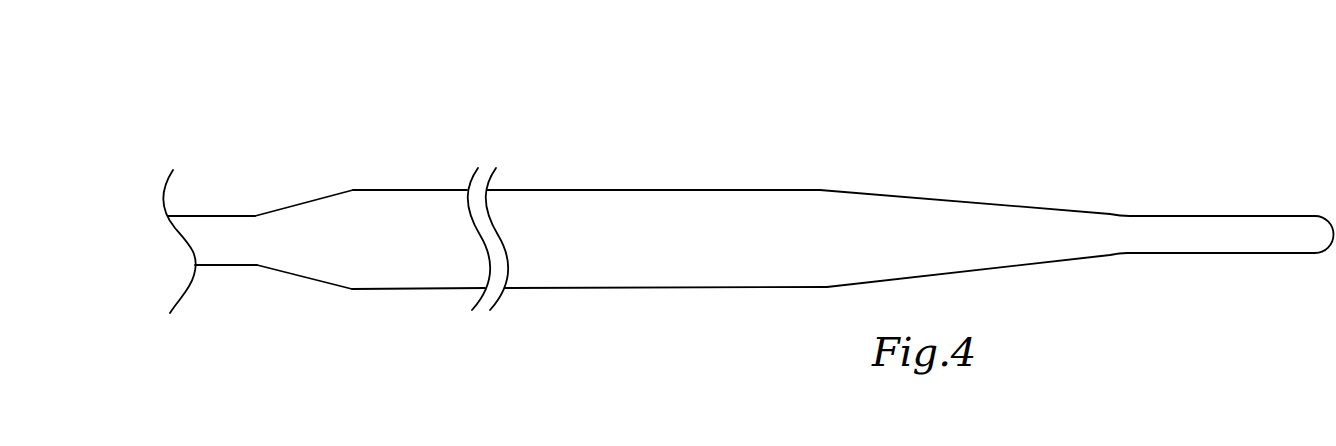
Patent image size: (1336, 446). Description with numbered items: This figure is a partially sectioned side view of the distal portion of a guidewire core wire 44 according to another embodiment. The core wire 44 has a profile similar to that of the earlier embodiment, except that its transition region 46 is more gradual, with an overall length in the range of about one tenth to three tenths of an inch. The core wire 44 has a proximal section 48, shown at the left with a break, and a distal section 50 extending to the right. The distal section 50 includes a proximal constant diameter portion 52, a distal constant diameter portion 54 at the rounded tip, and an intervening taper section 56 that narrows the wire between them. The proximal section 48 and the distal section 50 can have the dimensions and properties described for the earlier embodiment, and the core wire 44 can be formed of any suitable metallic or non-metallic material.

The core wire 44 is at (775, 188).
The transition region 46 is at (323, 213).
The proximal section 48 is at (236, 131).
The distal section 50 is at (1077, 214).
The proximal constant diameter portion 52 is at (590, 267).
The distal constant diameter portion 54 is at (1213, 238).
The taper section 56 is at (993, 245).